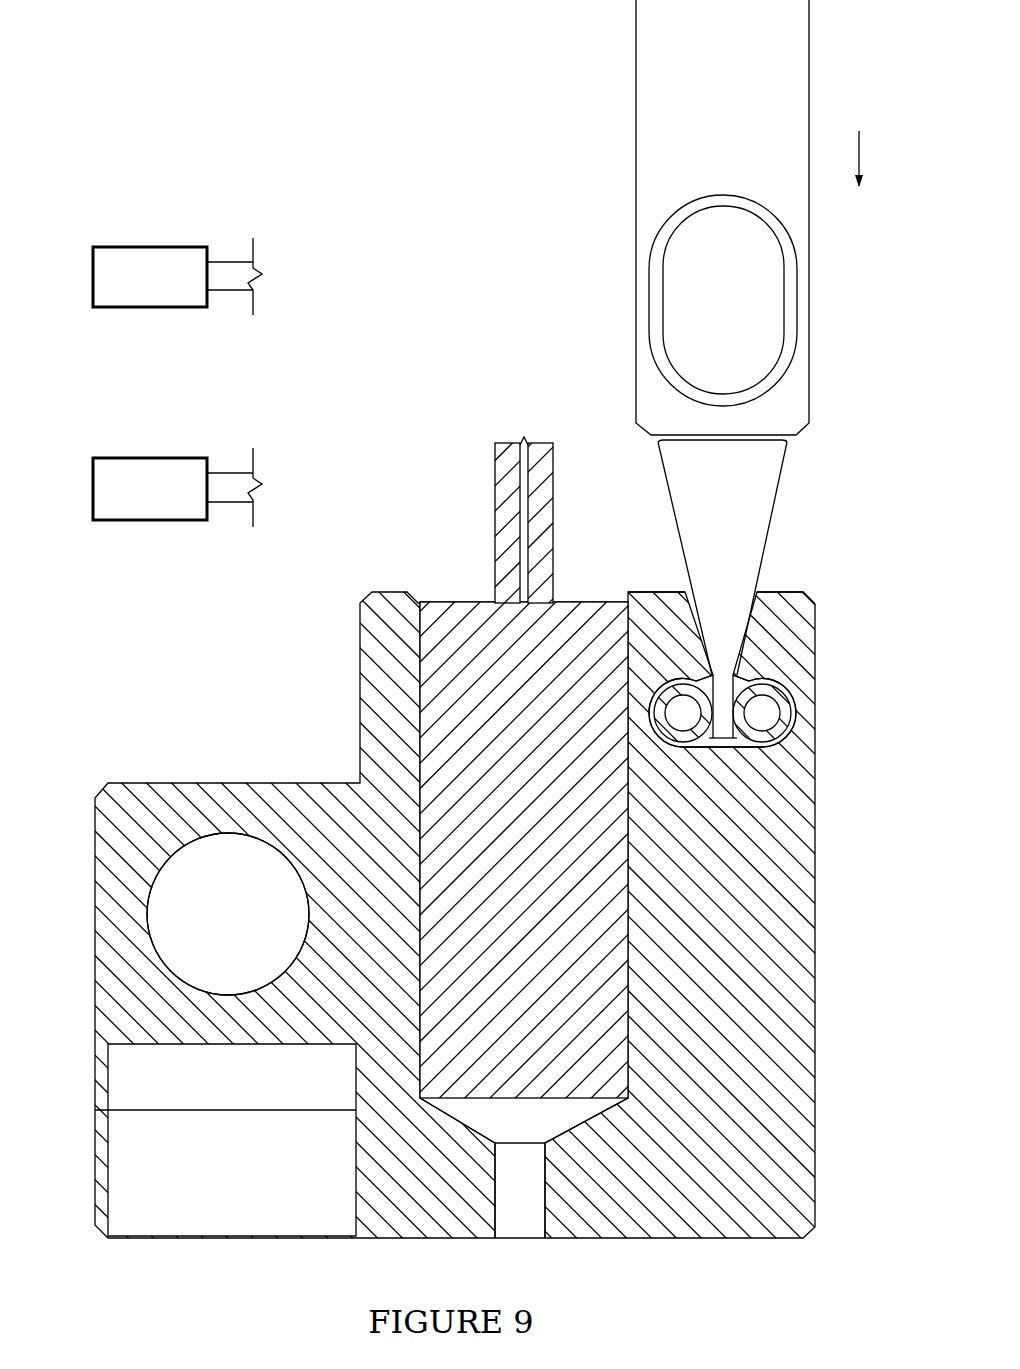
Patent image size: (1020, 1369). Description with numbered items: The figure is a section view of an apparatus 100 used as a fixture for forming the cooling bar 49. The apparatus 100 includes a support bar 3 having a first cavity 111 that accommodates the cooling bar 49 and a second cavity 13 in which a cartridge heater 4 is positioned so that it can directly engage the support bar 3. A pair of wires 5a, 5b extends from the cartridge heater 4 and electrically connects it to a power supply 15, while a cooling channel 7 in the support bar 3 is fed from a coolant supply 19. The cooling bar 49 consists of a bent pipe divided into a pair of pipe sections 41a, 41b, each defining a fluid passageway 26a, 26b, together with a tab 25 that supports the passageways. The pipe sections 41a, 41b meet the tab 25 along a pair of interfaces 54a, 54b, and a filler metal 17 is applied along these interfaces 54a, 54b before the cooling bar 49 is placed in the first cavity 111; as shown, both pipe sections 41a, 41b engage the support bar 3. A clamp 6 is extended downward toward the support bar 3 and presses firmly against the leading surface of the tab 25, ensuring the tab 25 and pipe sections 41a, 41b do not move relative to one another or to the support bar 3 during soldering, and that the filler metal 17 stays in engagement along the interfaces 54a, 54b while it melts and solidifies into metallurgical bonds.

The support bar 3 is at (812, 915).
The cartridge heater 4 is at (628, 852).
The wire 5a is at (495, 518).
The wire 5b is at (553, 515).
The clamp 6 is at (787, 201).
The cooling channel 7 is at (141, 914).
The second cavity 13 is at (570, 1124).
The power supply 15 is at (93, 276).
The filler metal 17 is at (688, 684).
The coolant supply 19 is at (93, 487).
The tab 25 is at (758, 510).
The fluid passageway 26a is at (764, 696).
The fluid passageway 26b is at (668, 712).
The pipe section 41a is at (786, 718).
The pipe section 41b is at (673, 673).
The cooling bar 49 is at (768, 337).
The interface 54a is at (740, 752).
The interface 54b is at (703, 752).
The apparatus 100 is at (510, 843).
The first cavity 111 is at (762, 584).